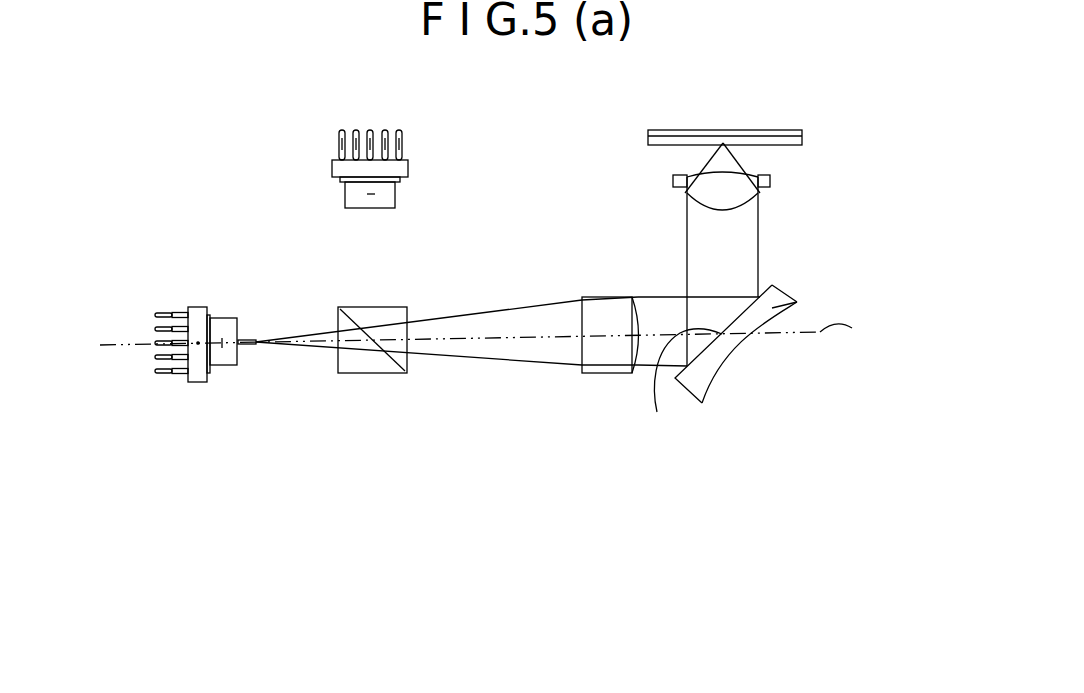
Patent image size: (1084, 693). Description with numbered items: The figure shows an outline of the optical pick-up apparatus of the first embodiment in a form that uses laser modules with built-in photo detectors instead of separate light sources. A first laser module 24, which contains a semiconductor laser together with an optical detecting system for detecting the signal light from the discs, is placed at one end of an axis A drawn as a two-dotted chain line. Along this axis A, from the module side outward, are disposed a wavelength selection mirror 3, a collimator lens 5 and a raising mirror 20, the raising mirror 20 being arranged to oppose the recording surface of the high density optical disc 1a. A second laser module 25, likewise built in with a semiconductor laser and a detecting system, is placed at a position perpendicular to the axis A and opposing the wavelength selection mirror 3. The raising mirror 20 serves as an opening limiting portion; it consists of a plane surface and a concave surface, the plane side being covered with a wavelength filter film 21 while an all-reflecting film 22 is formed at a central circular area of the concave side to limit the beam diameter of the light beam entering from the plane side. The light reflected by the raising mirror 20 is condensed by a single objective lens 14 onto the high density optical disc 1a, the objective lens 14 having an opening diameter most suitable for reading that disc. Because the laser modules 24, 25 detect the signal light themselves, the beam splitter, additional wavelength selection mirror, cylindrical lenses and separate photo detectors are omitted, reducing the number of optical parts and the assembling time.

The high density optical disc 1a is at (802, 137).
The wavelength selection mirror 3 is at (363, 317).
The collimator lens 5 is at (612, 310).
The objective lens 14 is at (673, 182).
The raising mirror 20 is at (797, 302).
The wavelength filter film 21 is at (657, 412).
The all-reflecting film 22 is at (740, 345).
The first laser module 24 is at (197, 322).
The second laser module 25 is at (332, 170).
The axis A is at (858, 328).